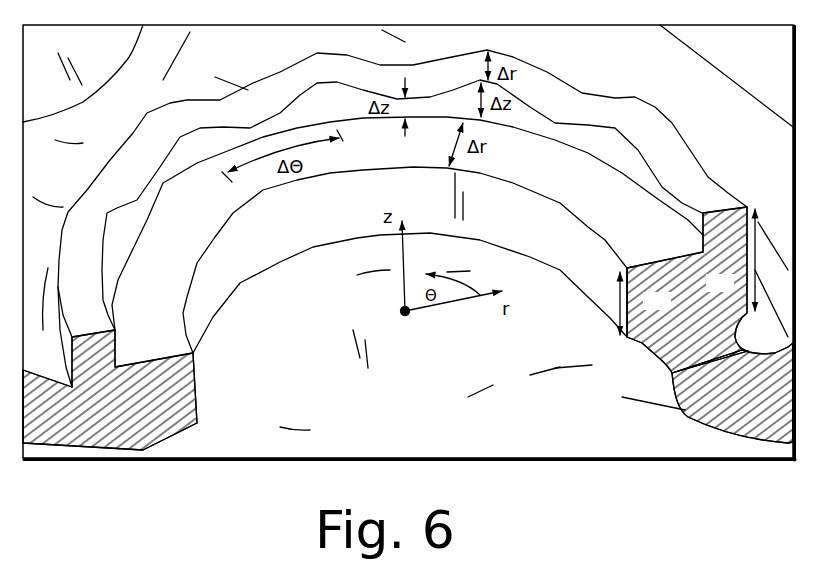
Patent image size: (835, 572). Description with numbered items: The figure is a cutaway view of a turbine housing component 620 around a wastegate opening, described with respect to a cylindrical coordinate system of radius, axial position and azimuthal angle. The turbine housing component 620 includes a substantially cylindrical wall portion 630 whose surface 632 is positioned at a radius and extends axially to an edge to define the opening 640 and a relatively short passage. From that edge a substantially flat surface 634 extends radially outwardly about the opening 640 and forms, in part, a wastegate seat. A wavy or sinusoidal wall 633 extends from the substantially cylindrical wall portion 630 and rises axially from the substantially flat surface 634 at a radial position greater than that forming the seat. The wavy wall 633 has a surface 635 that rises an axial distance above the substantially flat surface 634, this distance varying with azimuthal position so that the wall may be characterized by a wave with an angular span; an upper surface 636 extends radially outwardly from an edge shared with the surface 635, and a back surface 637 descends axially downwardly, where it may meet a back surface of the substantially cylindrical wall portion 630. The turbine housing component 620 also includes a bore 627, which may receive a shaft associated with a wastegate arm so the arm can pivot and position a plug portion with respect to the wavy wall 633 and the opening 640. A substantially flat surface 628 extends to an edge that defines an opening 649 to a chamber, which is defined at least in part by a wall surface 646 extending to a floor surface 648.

The turbine housing component 620 is at (674, 393).
The bore 627 is at (83, 116).
The substantially flat surface 628 is at (726, 181).
The substantially cylindrical wall portion 630 is at (110, 359).
The surface 632 is at (410, 289).
The wavy wall 633 is at (178, 97).
The substantially flat surface 634 is at (405, 260).
The surface 635 is at (618, 147).
The upper surface 636 is at (640, 115).
The back surface 637 is at (747, 207).
The opening 640 is at (598, 230).
The wall surface 646 is at (422, 60).
The floor surface 648 is at (672, 373).
The opening 649 is at (757, 100).